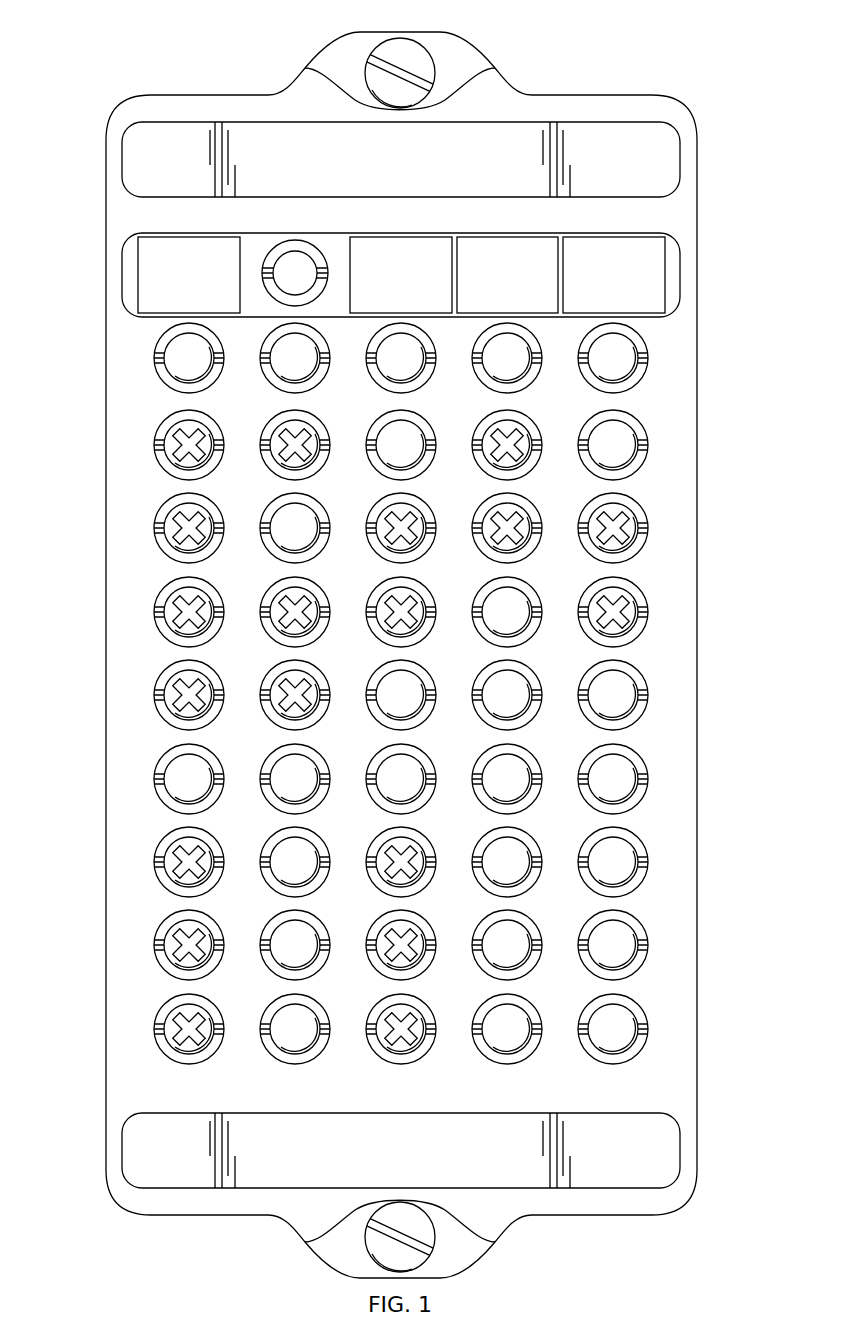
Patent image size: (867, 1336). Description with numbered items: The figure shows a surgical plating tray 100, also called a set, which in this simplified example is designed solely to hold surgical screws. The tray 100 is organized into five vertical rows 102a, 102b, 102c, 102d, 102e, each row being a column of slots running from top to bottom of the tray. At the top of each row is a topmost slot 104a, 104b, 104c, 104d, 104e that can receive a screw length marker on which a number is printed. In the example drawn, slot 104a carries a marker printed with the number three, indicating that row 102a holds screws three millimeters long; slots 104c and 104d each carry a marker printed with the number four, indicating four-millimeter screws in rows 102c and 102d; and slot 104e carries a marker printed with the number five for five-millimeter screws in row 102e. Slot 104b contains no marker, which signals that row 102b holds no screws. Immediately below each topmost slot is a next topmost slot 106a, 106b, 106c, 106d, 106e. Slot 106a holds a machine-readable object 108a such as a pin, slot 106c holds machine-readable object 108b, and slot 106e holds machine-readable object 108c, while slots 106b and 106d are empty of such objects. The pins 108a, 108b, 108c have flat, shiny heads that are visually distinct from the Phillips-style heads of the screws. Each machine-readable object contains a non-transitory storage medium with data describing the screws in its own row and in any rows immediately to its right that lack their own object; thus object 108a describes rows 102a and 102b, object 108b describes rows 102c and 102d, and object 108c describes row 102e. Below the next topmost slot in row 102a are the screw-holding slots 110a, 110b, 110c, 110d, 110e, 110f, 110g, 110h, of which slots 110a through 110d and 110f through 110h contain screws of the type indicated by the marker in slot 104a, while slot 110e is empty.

The surgical plating tray 100 is at (664, 62).
The row 102a is at (188, 217).
The row 102b is at (298, 217).
The row 102c is at (407, 217).
The row 102d is at (515, 217).
The row 102e is at (623, 217).
The slot 104a is at (163, 260).
The slot 104b is at (262, 258).
The slot 104c is at (377, 258).
The slot 104d is at (485, 258).
The slot 104e is at (590, 258).
The slot 106a is at (174, 397).
The slot 106b is at (280, 397).
The slot 106c is at (387, 397).
The slot 106d is at (493, 397).
The slot 106e is at (600, 397).
The machine-readable object 108a is at (189, 358).
The machine-readable object 108b is at (401, 358).
The machine-readable object 108c is at (613, 358).
The slot 110a is at (140, 445).
The slot 110b is at (140, 528).
The slot 110c is at (140, 612).
The slot 110d is at (140, 695).
The slot 110e is at (140, 779).
The slot 110f is at (140, 862).
The slot 110g is at (140, 945).
The slot 110h is at (140, 1029).